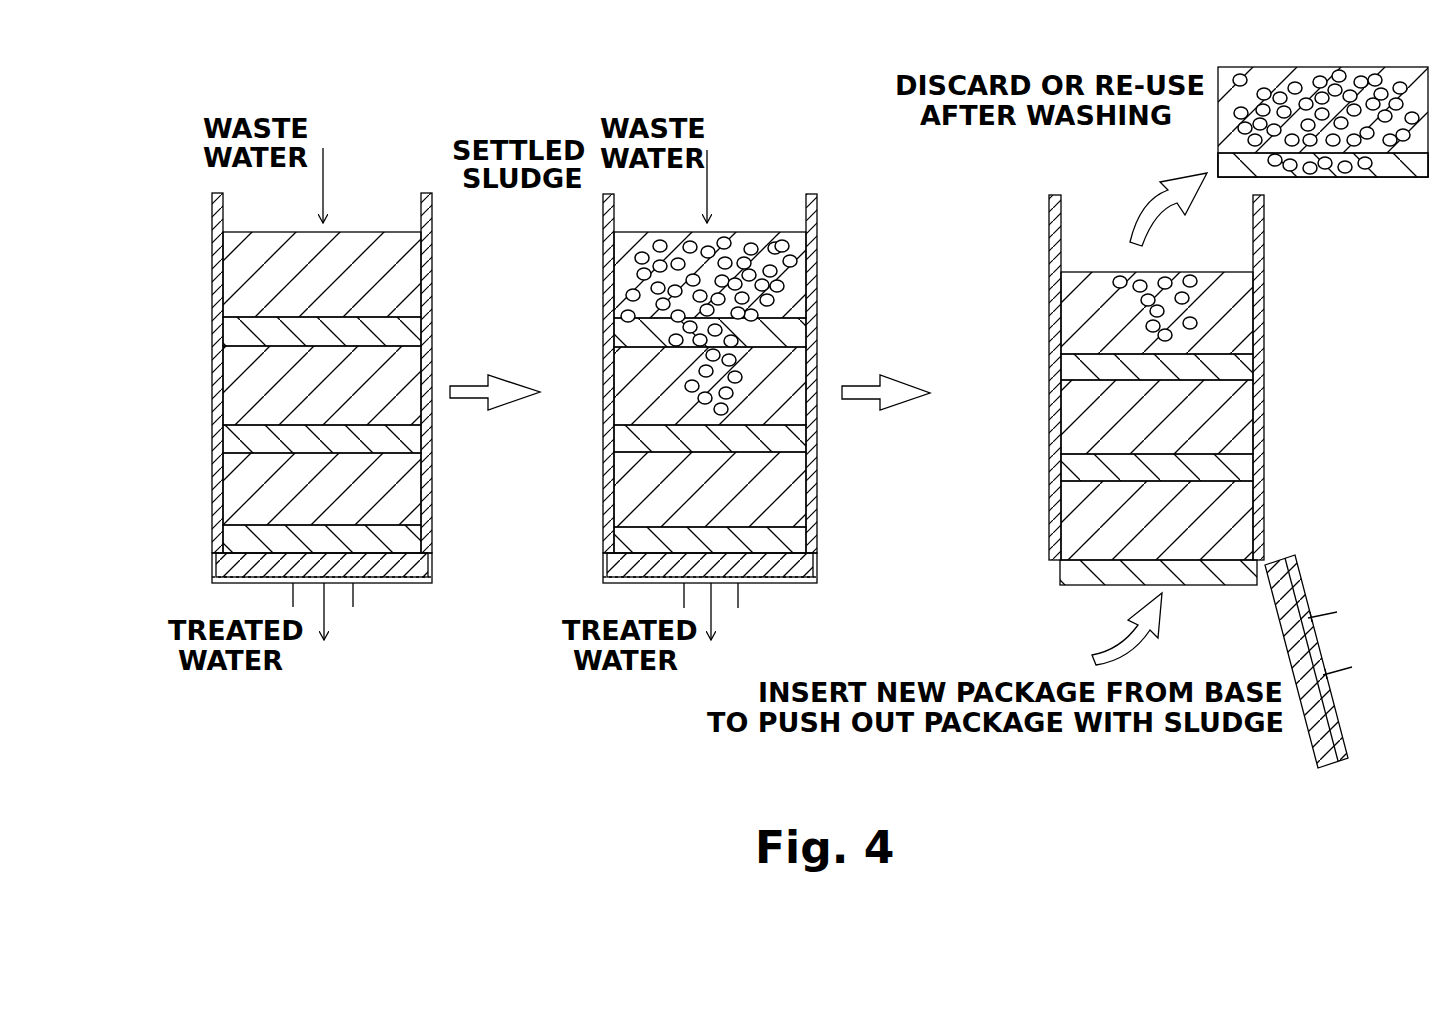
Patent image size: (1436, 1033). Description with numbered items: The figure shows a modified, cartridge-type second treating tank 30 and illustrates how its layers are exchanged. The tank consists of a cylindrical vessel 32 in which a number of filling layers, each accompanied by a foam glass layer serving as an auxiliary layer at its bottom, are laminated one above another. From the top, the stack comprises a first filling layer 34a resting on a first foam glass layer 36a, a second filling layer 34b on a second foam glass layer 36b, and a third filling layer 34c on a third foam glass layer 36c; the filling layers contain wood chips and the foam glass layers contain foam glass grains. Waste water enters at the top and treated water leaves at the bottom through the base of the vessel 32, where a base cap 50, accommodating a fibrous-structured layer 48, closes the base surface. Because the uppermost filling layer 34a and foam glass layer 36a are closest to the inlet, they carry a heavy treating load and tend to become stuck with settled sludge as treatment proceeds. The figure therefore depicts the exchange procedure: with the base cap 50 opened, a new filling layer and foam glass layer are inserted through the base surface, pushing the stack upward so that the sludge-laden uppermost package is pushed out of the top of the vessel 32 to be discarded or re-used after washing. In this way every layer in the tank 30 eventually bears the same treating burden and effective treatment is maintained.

The second treating tank 30 is at (304, 337).
The cylindrical vessel 32 is at (432, 272).
The first filling layer 34a is at (246, 272).
The second filling layer 34b is at (246, 397).
The third filling layer 34c is at (246, 497).
The first foam glass layer 36a is at (240, 325).
The second foam glass layer 36b is at (240, 432).
The third foam glass layer 36c is at (240, 540).
The fibrous-structured layer 48 is at (220, 568).
The base cap 50 is at (432, 575).